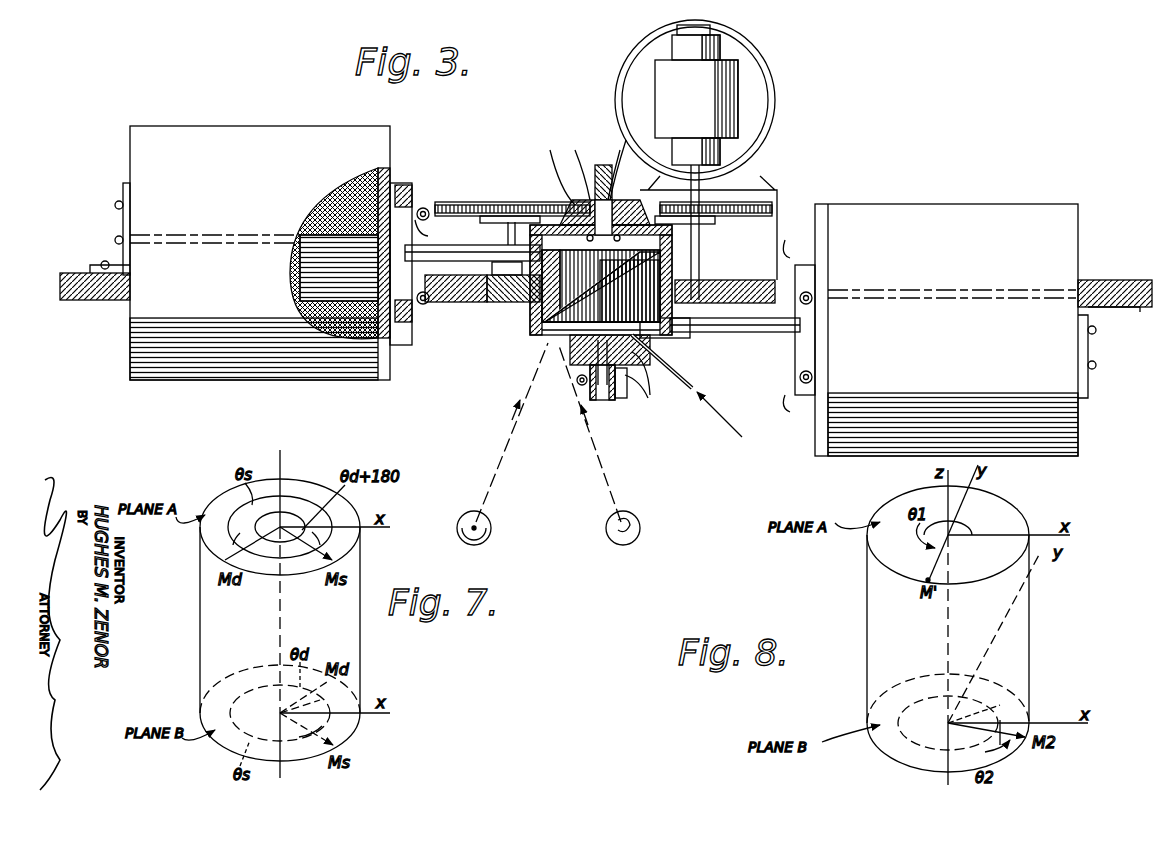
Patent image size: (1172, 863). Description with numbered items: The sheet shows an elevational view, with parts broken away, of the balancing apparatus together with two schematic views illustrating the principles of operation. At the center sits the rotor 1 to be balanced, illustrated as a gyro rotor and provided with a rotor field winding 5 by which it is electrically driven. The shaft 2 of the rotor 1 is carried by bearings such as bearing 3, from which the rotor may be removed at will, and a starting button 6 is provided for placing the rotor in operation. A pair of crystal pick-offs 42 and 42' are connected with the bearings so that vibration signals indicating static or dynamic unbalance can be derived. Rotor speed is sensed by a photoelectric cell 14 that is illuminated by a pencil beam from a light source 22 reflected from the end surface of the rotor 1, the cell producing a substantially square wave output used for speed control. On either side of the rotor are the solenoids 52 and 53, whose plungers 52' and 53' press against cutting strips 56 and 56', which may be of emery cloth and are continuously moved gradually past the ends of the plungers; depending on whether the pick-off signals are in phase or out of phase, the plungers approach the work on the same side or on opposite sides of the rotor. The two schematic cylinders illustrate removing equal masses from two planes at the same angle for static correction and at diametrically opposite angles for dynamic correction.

The rotor 1 is at (676, 272).
The shaft 2 is at (612, 382).
The bearing 3 is at (643, 195).
The rotor field winding 5 is at (583, 284).
The starting button 6 is at (425, 210).
The photoelectric cell 14 is at (462, 513).
The light source 22 is at (638, 515).
The crystal pick-off 42 is at (588, 165).
The crystal pick-off 42' is at (635, 405).
The solenoid 52 is at (245, 253).
The solenoid plunger 52' is at (472, 259).
The solenoid 53 is at (967, 315).
The solenoid plunger 53' is at (735, 345).
The cutting strip 56 is at (512, 197).
The cutting strip 56' is at (707, 283).